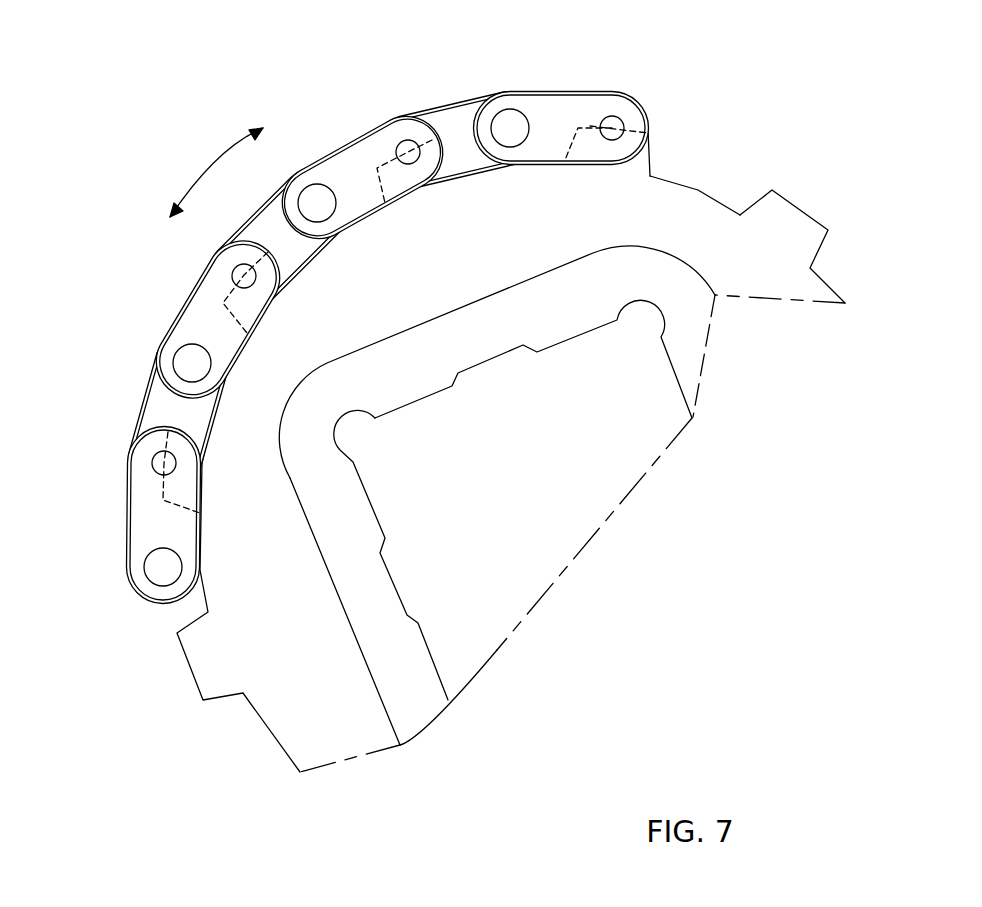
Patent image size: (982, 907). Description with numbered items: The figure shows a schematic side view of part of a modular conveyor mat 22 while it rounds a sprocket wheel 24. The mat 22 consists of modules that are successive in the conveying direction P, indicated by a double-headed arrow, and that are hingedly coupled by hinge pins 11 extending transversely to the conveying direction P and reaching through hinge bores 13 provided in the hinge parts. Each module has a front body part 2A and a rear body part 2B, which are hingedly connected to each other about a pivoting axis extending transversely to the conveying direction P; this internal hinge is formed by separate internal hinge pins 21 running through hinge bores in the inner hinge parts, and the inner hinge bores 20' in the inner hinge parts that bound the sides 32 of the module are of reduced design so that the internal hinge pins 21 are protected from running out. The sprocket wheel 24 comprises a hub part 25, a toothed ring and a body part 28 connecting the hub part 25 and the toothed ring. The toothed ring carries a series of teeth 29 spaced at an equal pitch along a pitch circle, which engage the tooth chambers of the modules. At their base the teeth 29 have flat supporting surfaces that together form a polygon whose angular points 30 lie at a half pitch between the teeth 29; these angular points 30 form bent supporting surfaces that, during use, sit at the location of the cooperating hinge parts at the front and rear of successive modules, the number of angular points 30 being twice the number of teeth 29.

The front body part 2A is at (359, 180).
The rear body part 2B is at (455, 97).
The inner hinge bore 20' is at (613, 85).
The modular conveyor mat 22 is at (650, 93).
The angular point 30 is at (698, 188).
The tooth 29 is at (788, 227).
The body part 28 is at (562, 237).
The hub part 25 is at (397, 585).
The sprocket wheel 24 is at (242, 760).
The hinge pin 11 is at (185, 362).
The internal hinge pin 21 is at (158, 462).
The side 32 is at (160, 526).
The hinge bore 13 is at (140, 567).
The conveying direction P is at (215, 170).